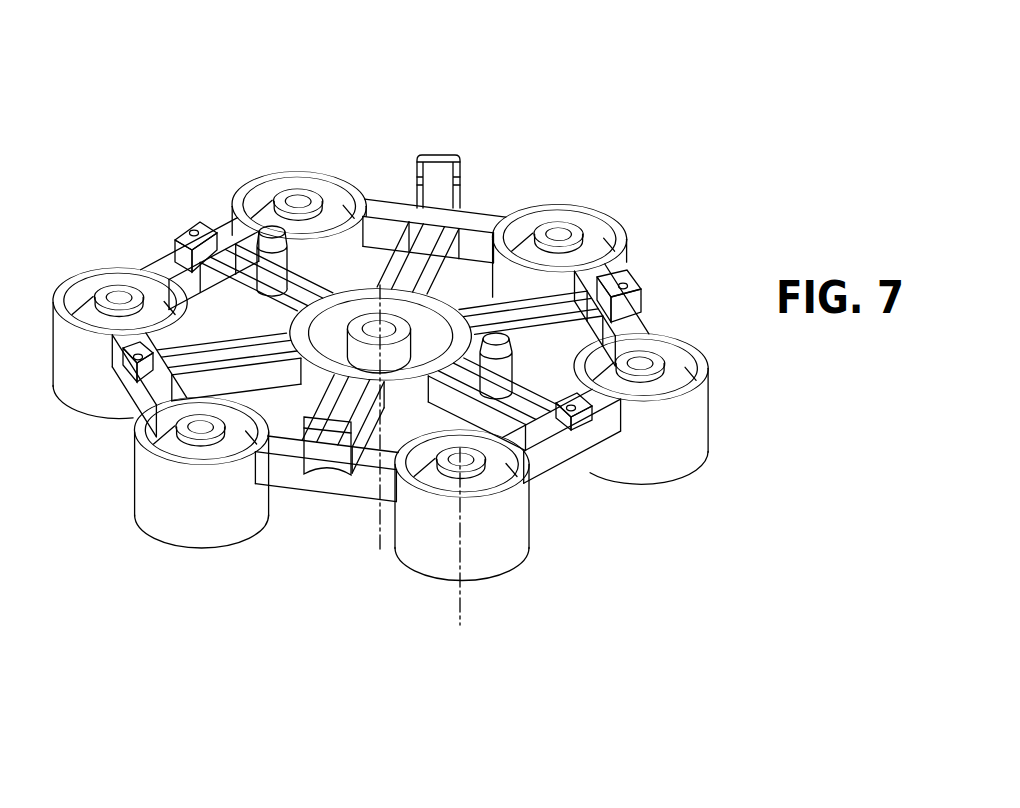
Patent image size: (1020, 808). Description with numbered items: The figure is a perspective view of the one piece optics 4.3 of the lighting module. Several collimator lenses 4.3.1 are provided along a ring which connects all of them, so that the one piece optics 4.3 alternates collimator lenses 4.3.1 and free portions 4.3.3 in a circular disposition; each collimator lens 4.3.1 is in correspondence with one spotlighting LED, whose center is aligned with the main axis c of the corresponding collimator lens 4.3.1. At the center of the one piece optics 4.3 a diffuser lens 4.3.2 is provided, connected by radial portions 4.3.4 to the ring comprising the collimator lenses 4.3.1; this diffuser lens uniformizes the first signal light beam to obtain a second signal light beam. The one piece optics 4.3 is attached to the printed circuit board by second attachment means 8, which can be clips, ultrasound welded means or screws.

The one piece optics 4.3 is at (538, 108).
The collimator lens 4.3.1 is at (240, 205).
The diffuser lens 4.3.2 is at (360, 328).
The free portions 4.3.3 is at (610, 307).
The radial portions 4.3.4 is at (552, 413).
The second attachment means 8 is at (327, 455).
The main axis of the collimator lens c is at (475, 547).